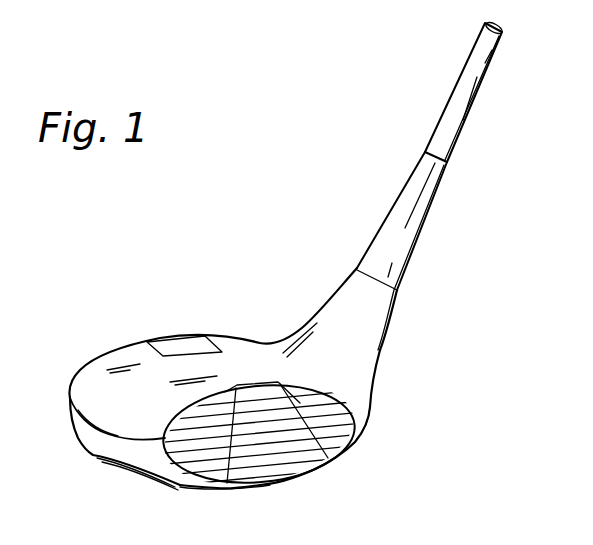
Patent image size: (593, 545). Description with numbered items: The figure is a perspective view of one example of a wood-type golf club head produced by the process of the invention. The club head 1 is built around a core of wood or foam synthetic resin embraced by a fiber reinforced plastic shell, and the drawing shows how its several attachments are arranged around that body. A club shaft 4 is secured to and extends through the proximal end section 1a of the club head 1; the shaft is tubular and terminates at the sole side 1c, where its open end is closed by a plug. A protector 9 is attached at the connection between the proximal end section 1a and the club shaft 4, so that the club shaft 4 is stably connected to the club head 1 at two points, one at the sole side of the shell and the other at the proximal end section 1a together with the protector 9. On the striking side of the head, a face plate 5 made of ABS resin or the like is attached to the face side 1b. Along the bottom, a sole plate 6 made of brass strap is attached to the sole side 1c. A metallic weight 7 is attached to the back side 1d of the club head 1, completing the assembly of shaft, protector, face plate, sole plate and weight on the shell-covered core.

The club head 1 is at (243, 326).
The proximal end section 1a is at (341, 291).
The face side 1b is at (349, 446).
The sole side 1c is at (210, 488).
The back side 1d is at (107, 352).
The club shaft 4 is at (466, 118).
The face plate 5 is at (287, 462).
The sole plate 6 is at (160, 482).
The metallic weight 7 is at (173, 345).
The protector 9 is at (422, 227).